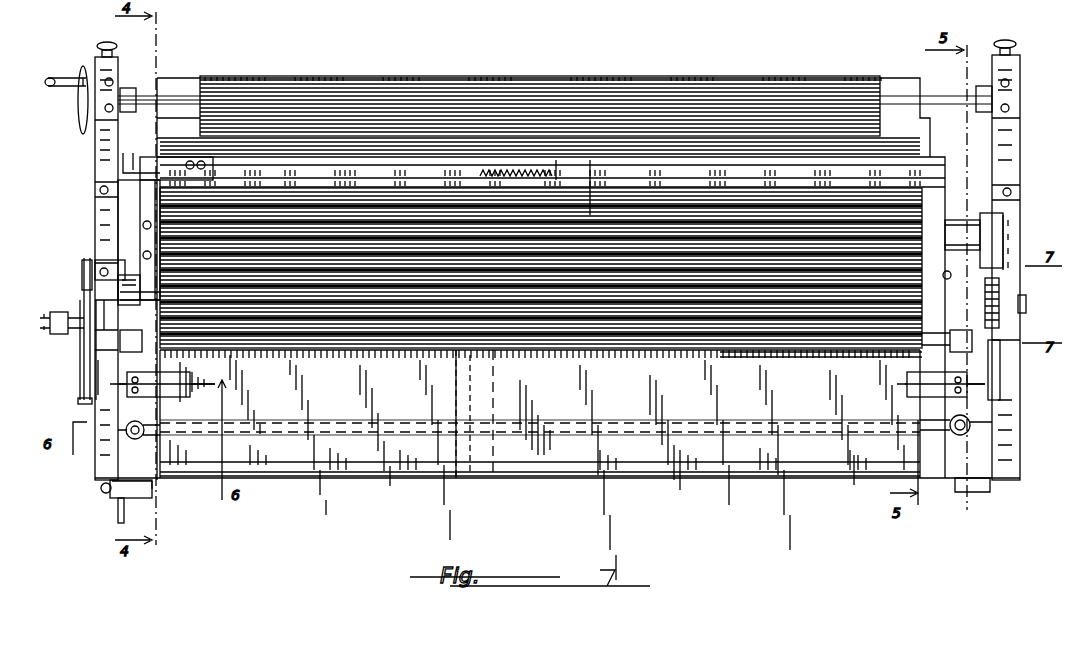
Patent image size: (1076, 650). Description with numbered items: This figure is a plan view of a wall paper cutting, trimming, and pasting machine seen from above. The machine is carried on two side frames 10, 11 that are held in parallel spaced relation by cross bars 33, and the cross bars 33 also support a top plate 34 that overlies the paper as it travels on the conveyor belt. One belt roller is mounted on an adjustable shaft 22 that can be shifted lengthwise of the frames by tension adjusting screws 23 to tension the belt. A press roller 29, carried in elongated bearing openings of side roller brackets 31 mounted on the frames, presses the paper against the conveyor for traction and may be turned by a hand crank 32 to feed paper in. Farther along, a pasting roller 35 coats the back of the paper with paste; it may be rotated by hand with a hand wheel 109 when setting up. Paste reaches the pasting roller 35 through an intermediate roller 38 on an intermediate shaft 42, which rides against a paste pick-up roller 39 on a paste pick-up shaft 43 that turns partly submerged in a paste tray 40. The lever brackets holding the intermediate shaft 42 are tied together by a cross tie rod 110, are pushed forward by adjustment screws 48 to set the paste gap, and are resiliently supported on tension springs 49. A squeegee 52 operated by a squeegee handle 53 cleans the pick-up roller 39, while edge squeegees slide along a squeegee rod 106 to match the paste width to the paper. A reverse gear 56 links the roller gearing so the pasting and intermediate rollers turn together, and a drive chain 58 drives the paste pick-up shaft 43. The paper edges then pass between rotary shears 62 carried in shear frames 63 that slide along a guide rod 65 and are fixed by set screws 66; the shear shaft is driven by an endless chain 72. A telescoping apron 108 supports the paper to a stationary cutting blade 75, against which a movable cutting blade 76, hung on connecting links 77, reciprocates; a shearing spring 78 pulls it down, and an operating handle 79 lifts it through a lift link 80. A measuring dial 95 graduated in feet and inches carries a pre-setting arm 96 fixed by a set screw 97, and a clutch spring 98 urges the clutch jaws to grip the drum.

The side frame 10 is at (98, 232).
The side frame 11 is at (1020, 150).
The adjustable shaft 22 is at (943, 100).
The tension adjusting screw 23 is at (1027, 34).
The press roller 29 is at (352, 88).
The side roller bracket 31 is at (982, 82).
The hand crank 32 is at (62, 88).
The cross bar 33 is at (975, 275).
The top plate 34 is at (398, 130).
The pasting roller 35 is at (384, 350).
The intermediate roller 38 is at (655, 303).
The paste pick-up roller 39 is at (590, 170).
The paste tray 40 is at (140, 213).
The intermediate shaft 42 is at (102, 292).
The paste pick-up shaft 43 is at (143, 246).
The adjustment screw 48 is at (950, 334).
The tension spring 49 is at (1000, 288).
The squeegee 52 is at (565, 176).
The squeegee handle 53 is at (125, 162).
The reverse gear 56 is at (1026, 305).
The drive chain 58 is at (1010, 226).
The rotary shear 62 is at (902, 367).
The shear frame 63 is at (908, 395).
The guide rod 65 is at (1000, 432).
The set screw 66 is at (1032, 414).
The endless chain 72 is at (1000, 368).
The stationary cutting blade 75 is at (578, 470).
The movable cutting blade 76 is at (628, 480).
The connecting link 77 is at (944, 492).
The shearing spring 78 is at (100, 489).
The operating handle 79 is at (117, 518).
The lift link 80 is at (135, 498).
The measuring dial 95 is at (86, 360).
The pre-setting arm 96 is at (80, 380).
The set screw 97 is at (78, 408).
The clutch spring 98 is at (40, 325).
The squeegee rod 106 is at (340, 178).
The telescoping apron 108 is at (465, 476).
The hand wheel 109 is at (84, 296).
The cross tie rod 110 is at (790, 350).